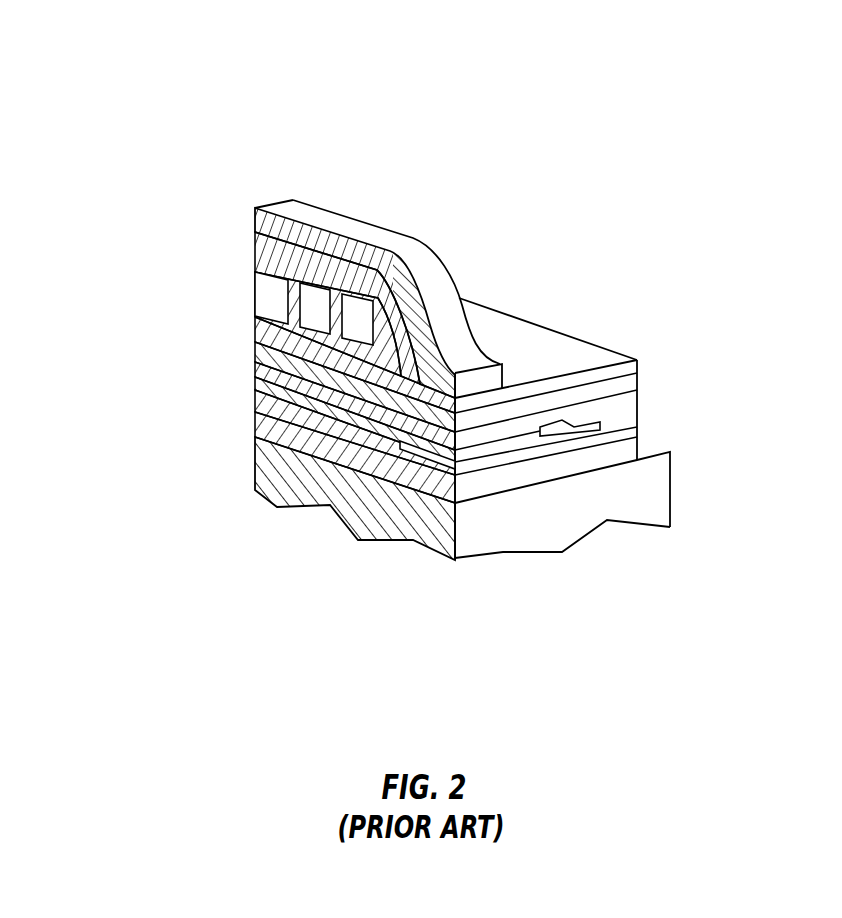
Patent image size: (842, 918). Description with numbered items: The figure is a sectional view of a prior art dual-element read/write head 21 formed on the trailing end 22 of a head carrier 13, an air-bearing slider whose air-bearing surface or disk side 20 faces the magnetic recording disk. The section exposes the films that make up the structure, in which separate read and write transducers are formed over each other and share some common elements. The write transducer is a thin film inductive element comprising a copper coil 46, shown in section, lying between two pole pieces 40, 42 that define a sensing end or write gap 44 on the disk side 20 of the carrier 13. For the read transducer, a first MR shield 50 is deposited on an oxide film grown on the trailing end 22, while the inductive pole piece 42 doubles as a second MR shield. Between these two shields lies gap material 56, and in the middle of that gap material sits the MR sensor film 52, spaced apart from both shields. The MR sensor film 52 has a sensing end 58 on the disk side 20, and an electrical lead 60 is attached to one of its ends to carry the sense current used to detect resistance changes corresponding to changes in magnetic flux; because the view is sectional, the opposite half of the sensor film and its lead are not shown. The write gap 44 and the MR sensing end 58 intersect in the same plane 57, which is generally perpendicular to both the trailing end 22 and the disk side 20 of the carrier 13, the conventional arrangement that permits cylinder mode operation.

The dual-element read/write head 21 is at (497, 185).
The coil 46 is at (357, 320).
The pole piece 40 is at (473, 375).
The write gap 44 is at (510, 397).
The pole piece 42 is at (638, 379).
The electrical lead 60 is at (600, 428).
The trailing end 22 is at (642, 443).
The head carrier 13 is at (677, 497).
The disk side 20 is at (622, 492).
The gap material 56 is at (262, 392).
The first MR shield 50 is at (260, 423).
The MR sensor film 52 is at (425, 453).
The sensing end 58 is at (510, 450).
The plane 57 is at (378, 505).